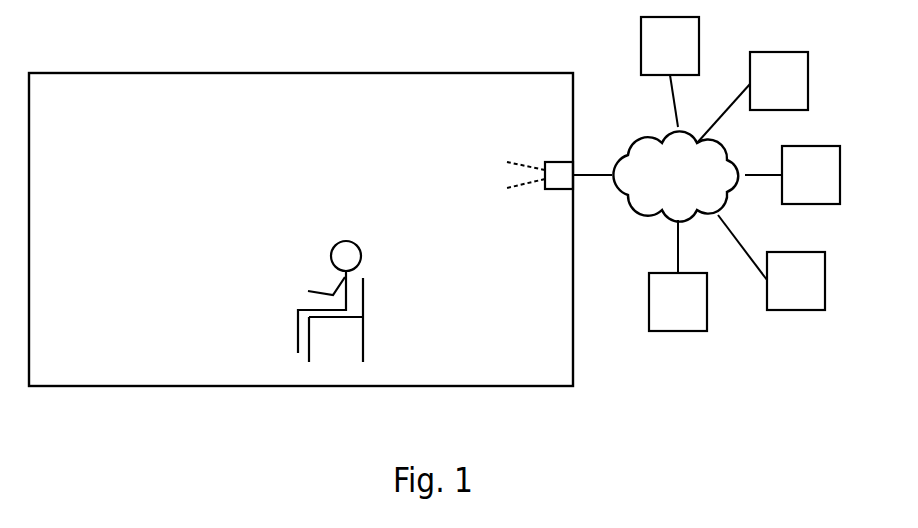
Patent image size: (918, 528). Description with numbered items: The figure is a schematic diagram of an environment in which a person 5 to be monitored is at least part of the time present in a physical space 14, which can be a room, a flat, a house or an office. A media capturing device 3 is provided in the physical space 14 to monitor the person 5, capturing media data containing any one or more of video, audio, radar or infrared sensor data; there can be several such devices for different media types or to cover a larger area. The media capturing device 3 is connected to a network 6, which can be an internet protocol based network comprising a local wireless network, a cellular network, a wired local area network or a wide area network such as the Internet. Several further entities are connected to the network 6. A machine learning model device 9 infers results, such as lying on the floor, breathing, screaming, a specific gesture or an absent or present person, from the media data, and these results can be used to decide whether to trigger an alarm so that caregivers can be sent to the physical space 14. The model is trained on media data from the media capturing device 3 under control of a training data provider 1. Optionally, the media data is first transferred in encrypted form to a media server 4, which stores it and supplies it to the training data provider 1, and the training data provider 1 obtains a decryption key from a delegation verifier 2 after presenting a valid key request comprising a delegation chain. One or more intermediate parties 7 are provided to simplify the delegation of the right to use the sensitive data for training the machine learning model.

The physical space 14 is at (124, 116).
The person 5 is at (345, 240).
The media capturing device 3 is at (556, 162).
The network 6 is at (669, 189).
The intermediate party 7 is at (661, 60).
The media server 4 is at (770, 95).
The delegation verifier 2 is at (802, 189).
The training data provider 1 is at (787, 295).
The machine learning model device 9 is at (669, 316).